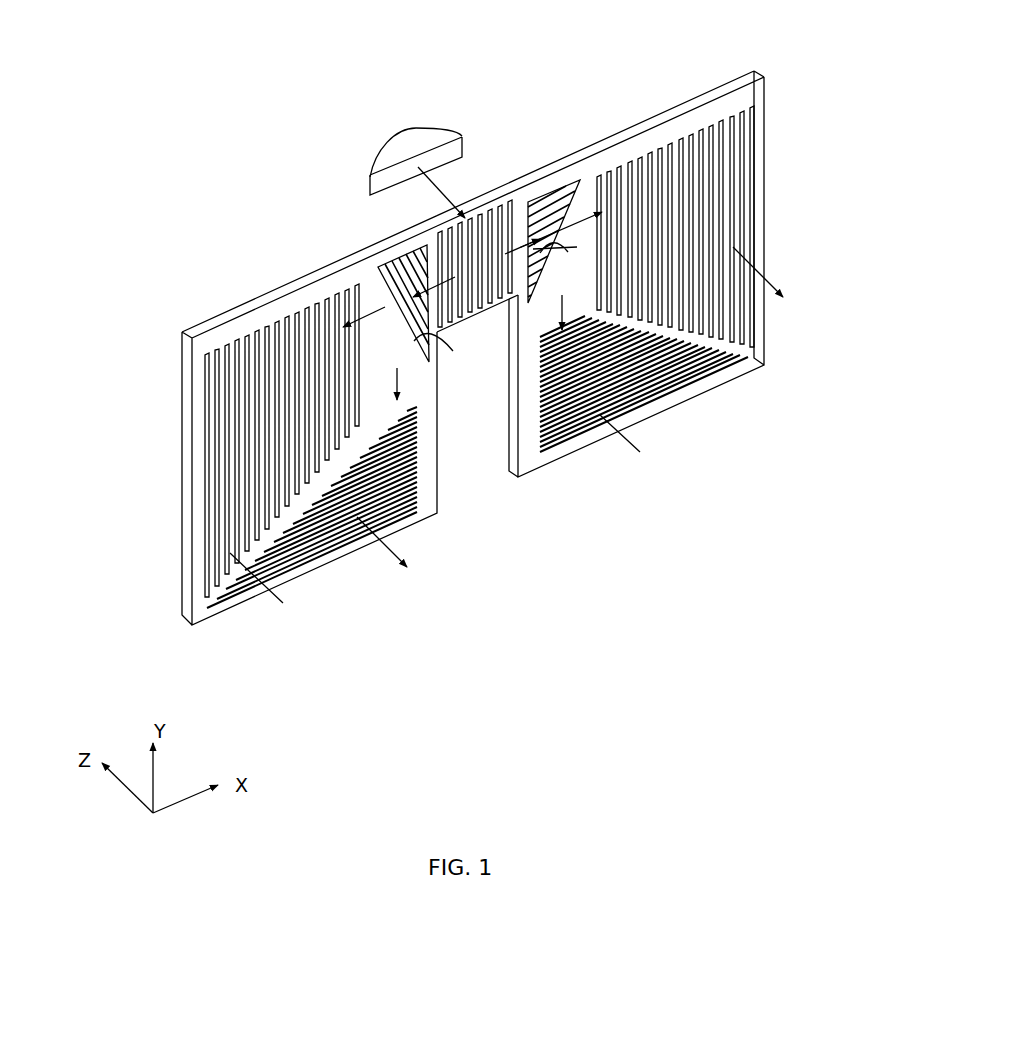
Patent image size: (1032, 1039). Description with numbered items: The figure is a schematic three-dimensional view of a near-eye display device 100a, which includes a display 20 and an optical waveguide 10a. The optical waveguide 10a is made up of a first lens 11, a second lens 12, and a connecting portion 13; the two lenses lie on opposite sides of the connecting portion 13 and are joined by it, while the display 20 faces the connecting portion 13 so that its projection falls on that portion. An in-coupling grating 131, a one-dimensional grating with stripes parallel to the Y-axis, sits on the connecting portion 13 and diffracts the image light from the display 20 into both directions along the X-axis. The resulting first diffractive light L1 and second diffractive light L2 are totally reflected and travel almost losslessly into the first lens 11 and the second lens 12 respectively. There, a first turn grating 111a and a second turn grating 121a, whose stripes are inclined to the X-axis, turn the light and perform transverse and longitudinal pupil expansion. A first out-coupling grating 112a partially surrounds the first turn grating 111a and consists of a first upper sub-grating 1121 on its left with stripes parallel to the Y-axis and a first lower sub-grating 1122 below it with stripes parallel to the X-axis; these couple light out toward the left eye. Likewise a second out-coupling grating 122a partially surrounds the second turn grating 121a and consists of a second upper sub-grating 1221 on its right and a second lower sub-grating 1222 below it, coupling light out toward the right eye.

The near-eye display device 100a is at (492, 24).
The optical waveguide 10a is at (92, 512).
The first lens 11 is at (322, 288).
The second lens 12 is at (642, 142).
The connecting portion 13 is at (477, 252).
The display 20 is at (435, 135).
The first turn grating 111a is at (382, 265).
The second turn grating 121a is at (565, 188).
The in-coupling grating 131 is at (488, 302).
The first out-coupling grating 112a is at (107, 553).
The first upper sub-grating 1121 is at (208, 560).
The first lower sub-grating 1122 is at (193, 623).
The second out-coupling grating 122a is at (845, 328).
The second upper sub-grating 1221 is at (727, 335).
The second lower sub-grating 1222 is at (715, 362).
The first diffractive light L1 is at (428, 253).
The second diffractive light L2 is at (527, 233).